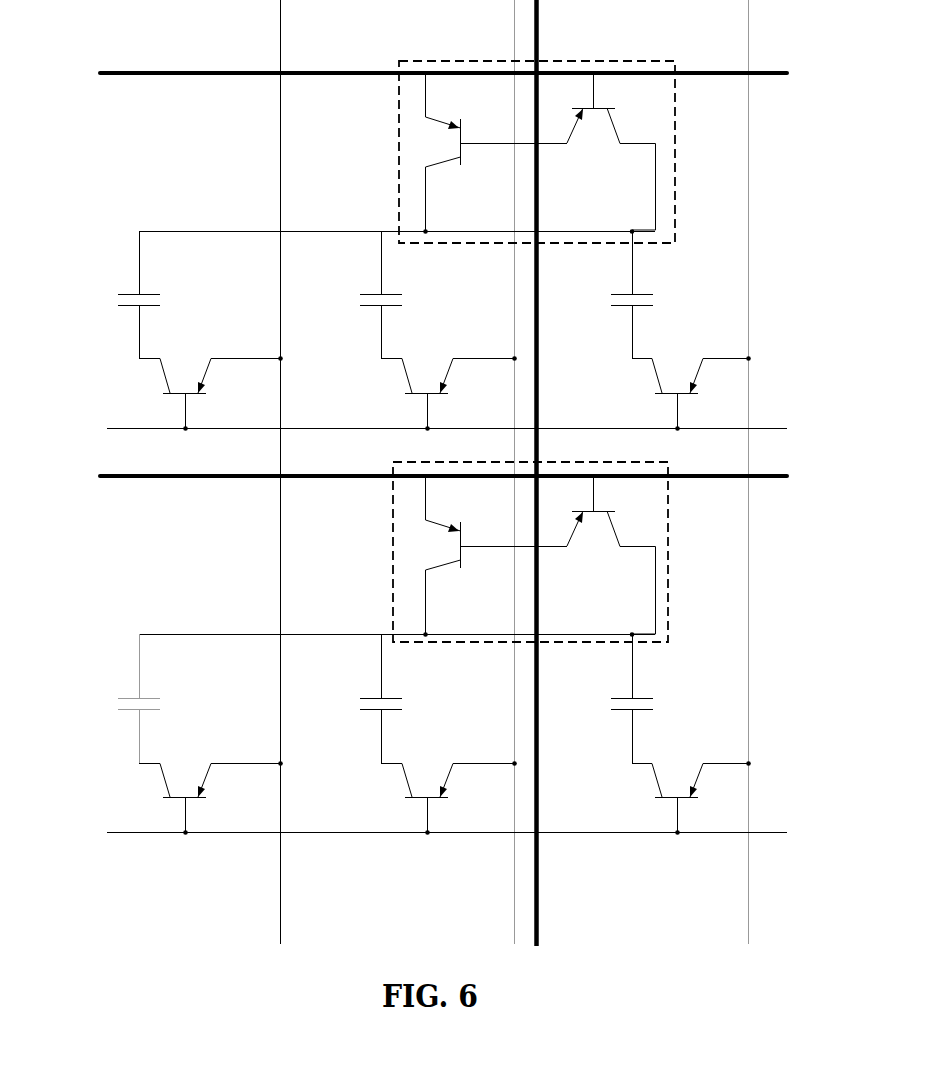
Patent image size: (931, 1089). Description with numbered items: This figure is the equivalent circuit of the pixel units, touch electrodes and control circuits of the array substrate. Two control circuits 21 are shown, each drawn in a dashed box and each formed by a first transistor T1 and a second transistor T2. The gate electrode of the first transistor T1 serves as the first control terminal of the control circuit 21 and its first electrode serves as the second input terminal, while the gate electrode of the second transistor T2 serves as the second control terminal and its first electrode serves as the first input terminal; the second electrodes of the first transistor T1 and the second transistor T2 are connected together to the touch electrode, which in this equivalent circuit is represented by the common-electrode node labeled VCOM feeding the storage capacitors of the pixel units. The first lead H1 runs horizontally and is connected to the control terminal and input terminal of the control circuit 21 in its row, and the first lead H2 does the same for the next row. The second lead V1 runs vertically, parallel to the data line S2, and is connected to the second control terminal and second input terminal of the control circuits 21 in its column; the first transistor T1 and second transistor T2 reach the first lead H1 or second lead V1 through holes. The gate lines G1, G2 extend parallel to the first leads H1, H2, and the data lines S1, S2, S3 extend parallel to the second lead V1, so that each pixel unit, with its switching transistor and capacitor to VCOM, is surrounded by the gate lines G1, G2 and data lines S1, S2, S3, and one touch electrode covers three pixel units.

The control circuit 21 is at (542, 320).
The first transistor T1 is at (482, 353).
The second transistor T2 is at (611, 353).
The first lead H1 is at (429, 73).
The first lead H2 is at (429, 476).
The gate line G1 is at (431, 428).
The gate line G2 is at (431, 832).
The data line S1 is at (266, 472).
The data line S2 is at (502, 472).
The data line S3 is at (736, 472).
The second lead V1 is at (554, 473).
The common voltage storage capacitor VCOM is at (418, 497).